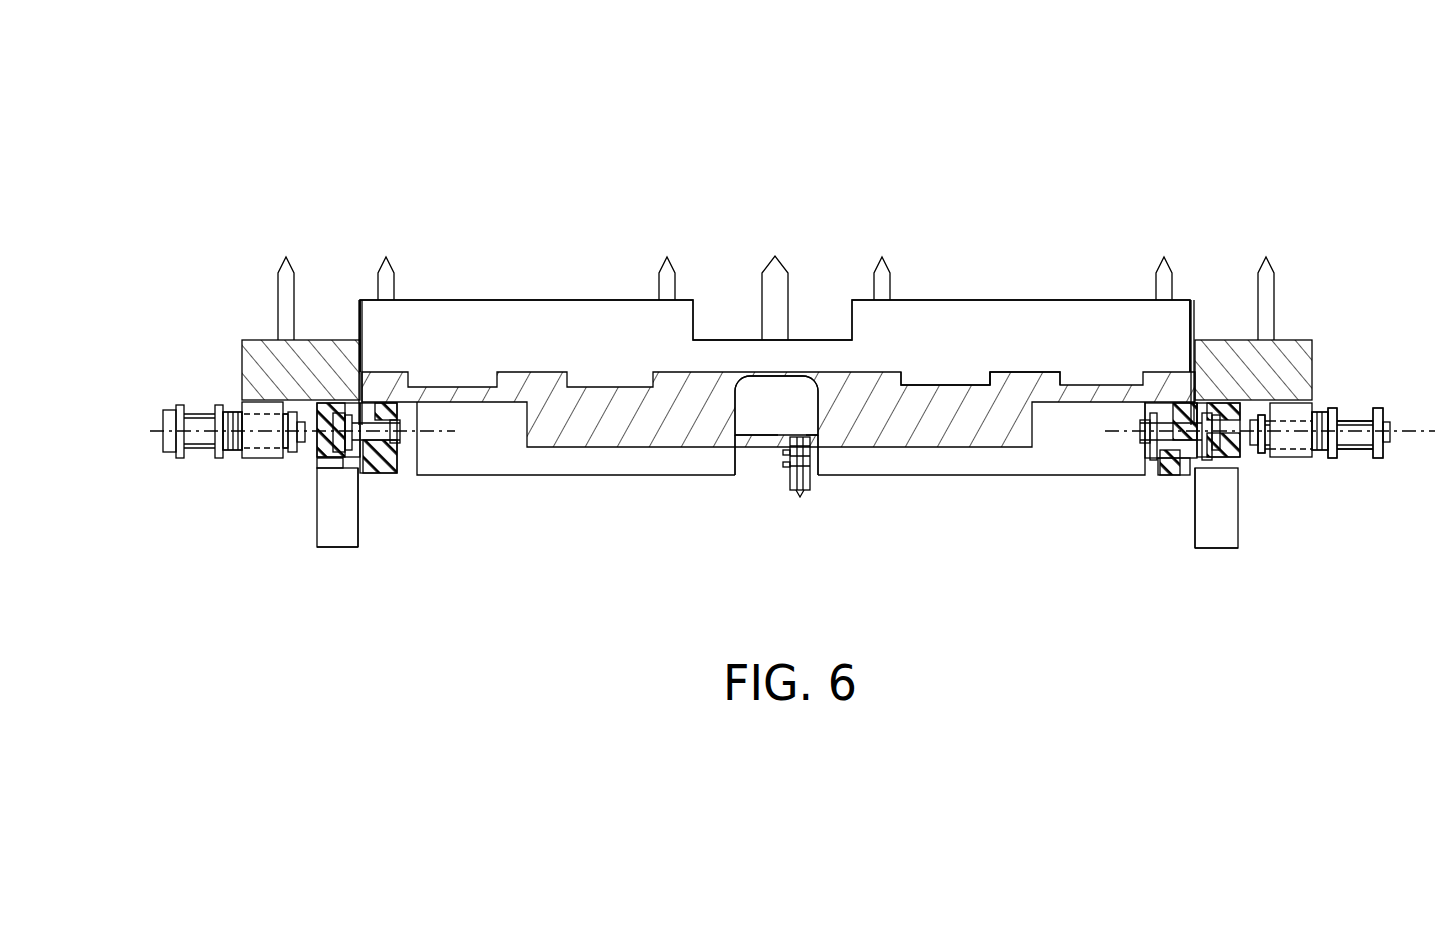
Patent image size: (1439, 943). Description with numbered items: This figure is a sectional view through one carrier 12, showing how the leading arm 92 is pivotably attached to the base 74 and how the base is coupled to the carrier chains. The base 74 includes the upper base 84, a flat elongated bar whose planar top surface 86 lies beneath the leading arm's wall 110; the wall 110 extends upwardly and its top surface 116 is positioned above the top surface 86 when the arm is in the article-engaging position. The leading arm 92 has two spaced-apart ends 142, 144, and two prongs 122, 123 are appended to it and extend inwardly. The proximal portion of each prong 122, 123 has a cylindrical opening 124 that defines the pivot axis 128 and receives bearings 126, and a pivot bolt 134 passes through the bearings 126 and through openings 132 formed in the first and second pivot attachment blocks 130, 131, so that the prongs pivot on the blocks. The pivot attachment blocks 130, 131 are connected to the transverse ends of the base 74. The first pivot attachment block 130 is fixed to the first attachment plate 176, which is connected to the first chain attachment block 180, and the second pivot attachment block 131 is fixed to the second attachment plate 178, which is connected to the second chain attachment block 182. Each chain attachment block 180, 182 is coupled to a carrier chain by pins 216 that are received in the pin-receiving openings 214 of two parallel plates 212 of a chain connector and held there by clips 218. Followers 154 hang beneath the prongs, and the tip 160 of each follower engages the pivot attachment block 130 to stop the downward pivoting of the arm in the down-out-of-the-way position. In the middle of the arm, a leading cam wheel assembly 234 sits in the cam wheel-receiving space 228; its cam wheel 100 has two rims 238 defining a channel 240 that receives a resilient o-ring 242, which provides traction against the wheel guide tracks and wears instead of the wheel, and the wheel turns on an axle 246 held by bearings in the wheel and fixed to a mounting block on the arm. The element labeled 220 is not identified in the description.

The carrier 12 is at (438, 120).
The base 74 is at (933, 365).
The upper base 84 is at (634, 405).
The top surface 86 is at (1011, 371).
The leading arm 92 is at (492, 471).
The cam wheel 100 is at (808, 490).
The wall 110 is at (545, 315).
The top surface 116 is at (447, 301).
The first prong 122 is at (378, 466).
The second prong 123 is at (1177, 476).
The opening 124 is at (363, 418).
The bearings 126 is at (400, 424).
The pivot axis 128 is at (441, 433).
The first pivot attachment block 130 is at (327, 459).
The second pivot attachment block 131 is at (1245, 462).
The openings 132 is at (350, 461).
The pivot bolt 134 is at (398, 443).
The first end 142 is at (360, 320).
The second end 144 is at (1195, 320).
The follower 154 is at (316, 535).
The tip 160 is at (333, 549).
The first attachment plate 176 is at (243, 356).
The second attachment plate 178 is at (1313, 360).
The first chain attachment block 180 is at (252, 456).
The second chain attachment block 182 is at (1302, 452).
The parallel plates 212 is at (1332, 408).
The pin-receiving openings 214 is at (1357, 423).
The pins 216 is at (274, 456).
The clips 218 is at (1254, 451).
The washer 220 is at (278, 459).
The cam wheel-receiving space 228 is at (755, 479).
The leading cam wheel assembly 234 is at (775, 511).
The rims 238 is at (805, 434).
The channel 240 is at (796, 445).
The o-ring 242 is at (800, 491).
The axle 246 is at (783, 453).